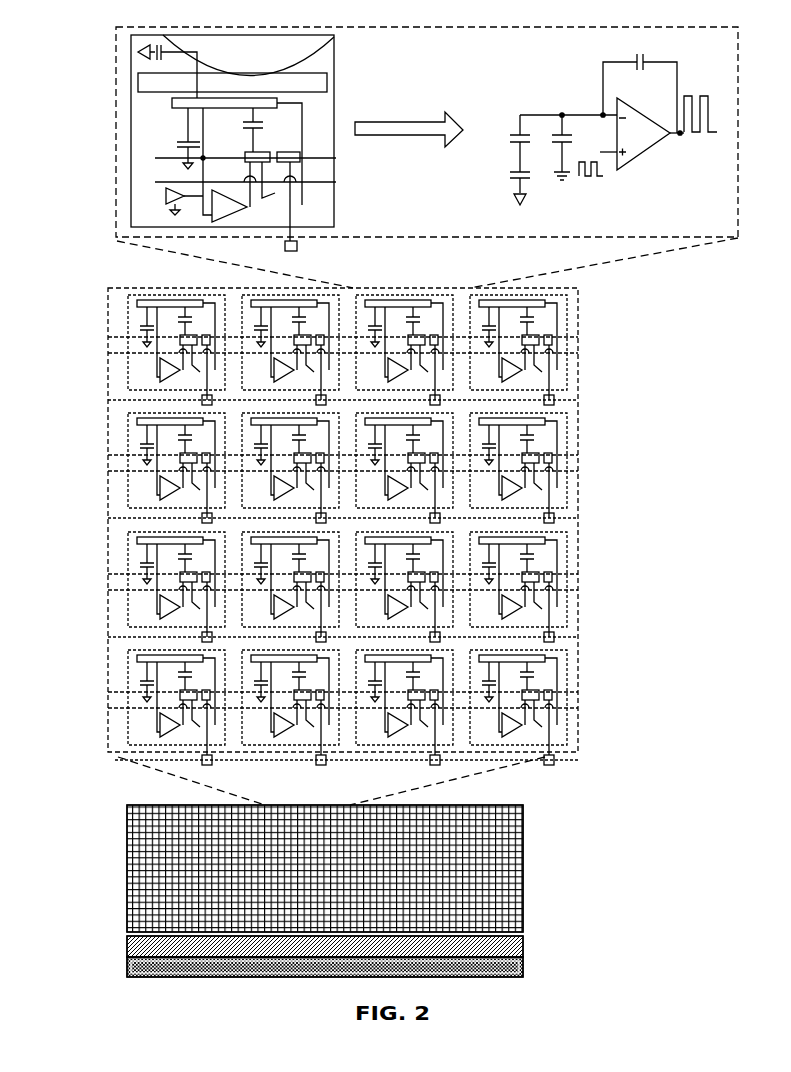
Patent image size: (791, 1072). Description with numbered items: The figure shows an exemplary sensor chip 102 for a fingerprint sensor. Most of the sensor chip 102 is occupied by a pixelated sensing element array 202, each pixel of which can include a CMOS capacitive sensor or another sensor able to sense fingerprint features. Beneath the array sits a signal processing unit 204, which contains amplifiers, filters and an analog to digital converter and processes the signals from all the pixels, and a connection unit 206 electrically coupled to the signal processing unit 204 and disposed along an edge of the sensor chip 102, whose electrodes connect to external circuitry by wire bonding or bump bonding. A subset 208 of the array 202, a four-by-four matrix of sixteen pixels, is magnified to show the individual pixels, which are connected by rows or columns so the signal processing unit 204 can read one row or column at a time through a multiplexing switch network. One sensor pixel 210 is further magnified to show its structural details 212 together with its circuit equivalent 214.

The sensor chip 102 is at (333, 904).
The pixelated sensing element array 202 is at (520, 812).
The signal processing unit 204 is at (513, 948).
The connection unit 206 is at (512, 975).
The subset of the array of sensor pixels 208 is at (578, 382).
The sensor pixel 210 is at (348, 88).
The structural details 212 is at (116, 115).
The circuit equivalent 214 is at (530, 88).